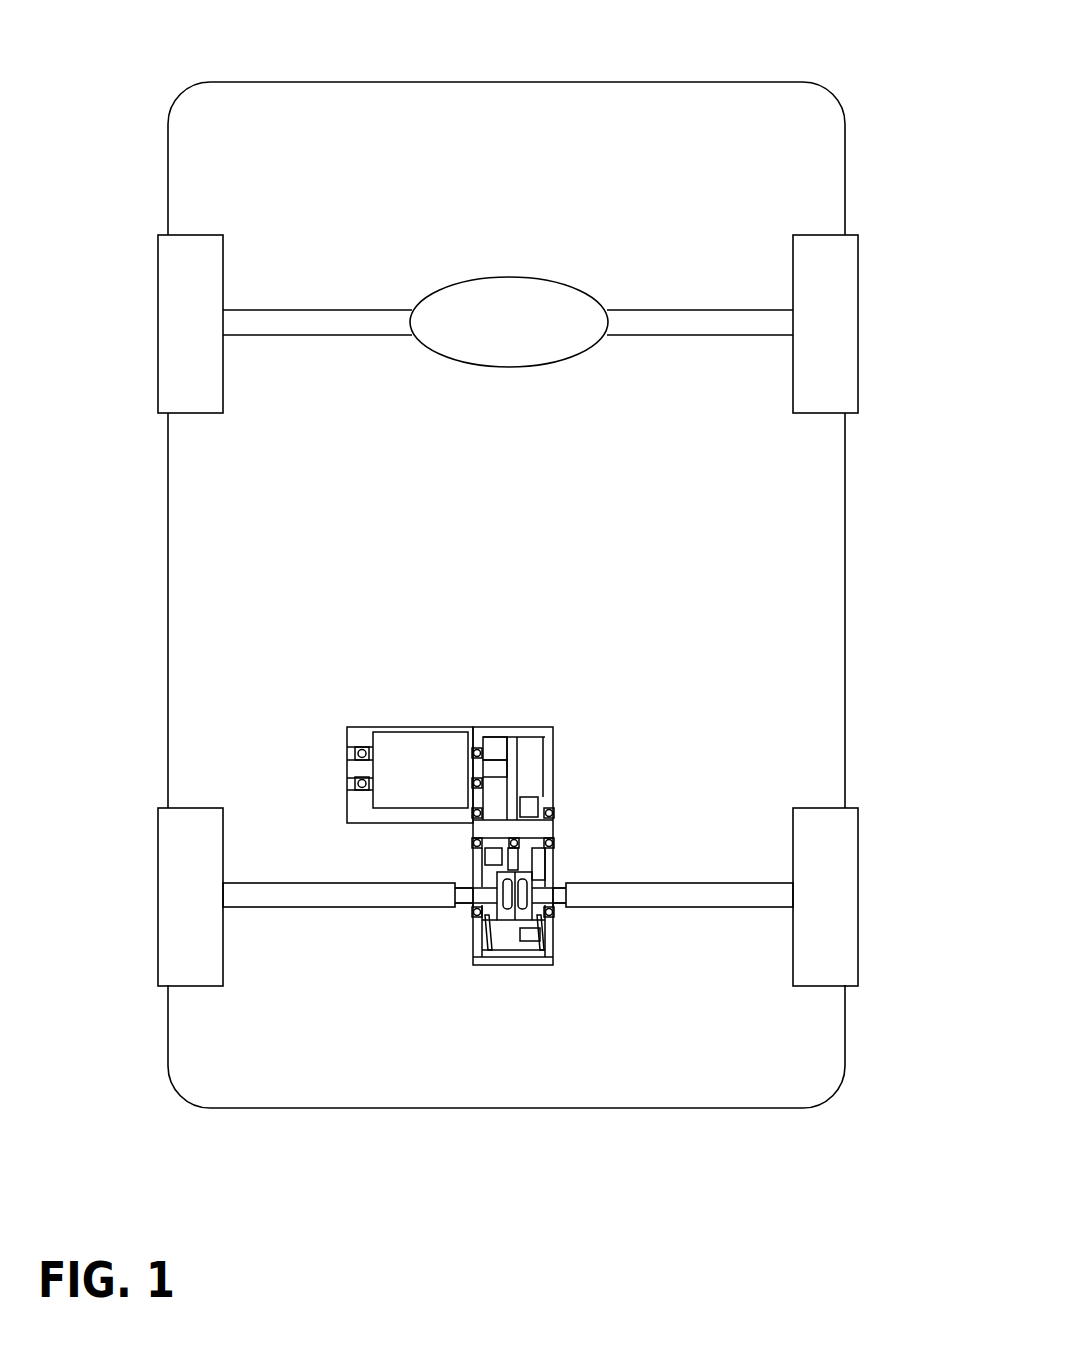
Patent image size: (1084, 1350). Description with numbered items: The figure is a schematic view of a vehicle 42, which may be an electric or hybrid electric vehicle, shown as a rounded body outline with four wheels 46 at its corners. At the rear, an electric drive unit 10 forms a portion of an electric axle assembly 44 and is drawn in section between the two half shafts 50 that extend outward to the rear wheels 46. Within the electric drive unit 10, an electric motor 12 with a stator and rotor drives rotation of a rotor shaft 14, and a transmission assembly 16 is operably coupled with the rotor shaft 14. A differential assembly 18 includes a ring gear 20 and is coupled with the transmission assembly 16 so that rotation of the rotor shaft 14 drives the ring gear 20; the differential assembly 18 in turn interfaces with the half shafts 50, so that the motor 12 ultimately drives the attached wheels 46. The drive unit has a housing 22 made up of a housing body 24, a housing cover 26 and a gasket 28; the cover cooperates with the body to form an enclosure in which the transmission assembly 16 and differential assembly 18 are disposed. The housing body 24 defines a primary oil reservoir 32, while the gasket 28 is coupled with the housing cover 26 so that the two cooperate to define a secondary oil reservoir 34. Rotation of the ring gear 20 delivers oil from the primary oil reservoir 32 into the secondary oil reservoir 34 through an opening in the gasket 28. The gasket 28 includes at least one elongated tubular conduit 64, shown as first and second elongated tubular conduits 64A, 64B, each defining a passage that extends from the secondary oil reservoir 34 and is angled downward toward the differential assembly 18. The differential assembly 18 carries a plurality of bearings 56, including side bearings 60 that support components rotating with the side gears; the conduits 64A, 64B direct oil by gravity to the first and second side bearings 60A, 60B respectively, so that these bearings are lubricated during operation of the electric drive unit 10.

The electric drive unit 10 is at (602, 718).
The motor 12 is at (415, 752).
The rotor shaft 14 is at (497, 763).
The transmission assembly 16 is at (530, 807).
The differential assembly 18 is at (518, 890).
The ring gear 20 is at (548, 928).
The housing 22 is at (472, 968).
The housing body 24 is at (472, 923).
The housing cover 26 is at (507, 963).
The gasket 28 is at (515, 943).
The primary oil reservoir 32 is at (532, 863).
The secondary oil reservoir 34 is at (493, 958).
The vehicle 42 is at (703, 115).
The electric axle assembly 44 is at (460, 855).
The wheel 46 is at (172, 317).
The half shaft 50 is at (283, 900).
The bearing 56 is at (496, 1032).
The side bearing 60 is at (496, 1032).
The first side bearing 60A is at (472, 908).
The second side bearing 60B is at (555, 910).
The elongated tubular conduit 64 is at (519, 1062).
The first elongated tubular conduit 64A is at (472, 935).
The second elongated tubular conduit 64B is at (543, 935).